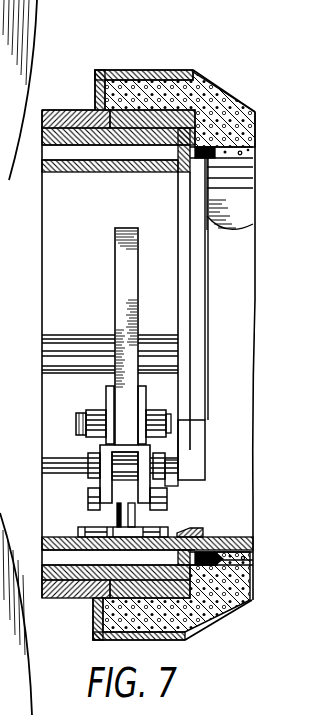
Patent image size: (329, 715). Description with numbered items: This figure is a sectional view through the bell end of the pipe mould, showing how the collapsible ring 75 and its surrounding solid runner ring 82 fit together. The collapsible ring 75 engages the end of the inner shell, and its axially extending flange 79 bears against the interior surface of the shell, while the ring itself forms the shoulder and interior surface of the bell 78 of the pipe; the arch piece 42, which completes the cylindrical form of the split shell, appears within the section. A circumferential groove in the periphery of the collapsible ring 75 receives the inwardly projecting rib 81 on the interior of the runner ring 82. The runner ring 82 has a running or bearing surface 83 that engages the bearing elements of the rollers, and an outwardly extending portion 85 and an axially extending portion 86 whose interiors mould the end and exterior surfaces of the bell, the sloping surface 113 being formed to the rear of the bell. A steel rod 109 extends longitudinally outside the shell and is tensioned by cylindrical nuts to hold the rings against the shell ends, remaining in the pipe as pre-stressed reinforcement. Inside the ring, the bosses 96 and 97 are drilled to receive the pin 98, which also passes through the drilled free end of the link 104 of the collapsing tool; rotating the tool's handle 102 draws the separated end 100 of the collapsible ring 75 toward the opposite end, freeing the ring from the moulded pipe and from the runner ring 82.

The arch piece 42 is at (239, 177).
The collapsible ring 75 is at (50, 241).
The bell 78 is at (190, 630).
The axially extending flange 79 is at (196, 318).
The inwardly projecting rib 81 is at (80, 110).
The solid runner ring 82 is at (117, 70).
The running or bearing surface 83 is at (50, 110).
The outwardly extending portion 85 is at (97, 82).
The axially extending portion 86 is at (177, 72).
The boss 96 is at (93, 413).
The boss 97 is at (87, 525).
The pin 98 is at (72, 420).
The separated end 100 is at (57, 437).
The handle 102 is at (122, 277).
The link 104 is at (125, 512).
The steel rod 109 is at (247, 153).
The sloping surface 113 is at (207, 90).